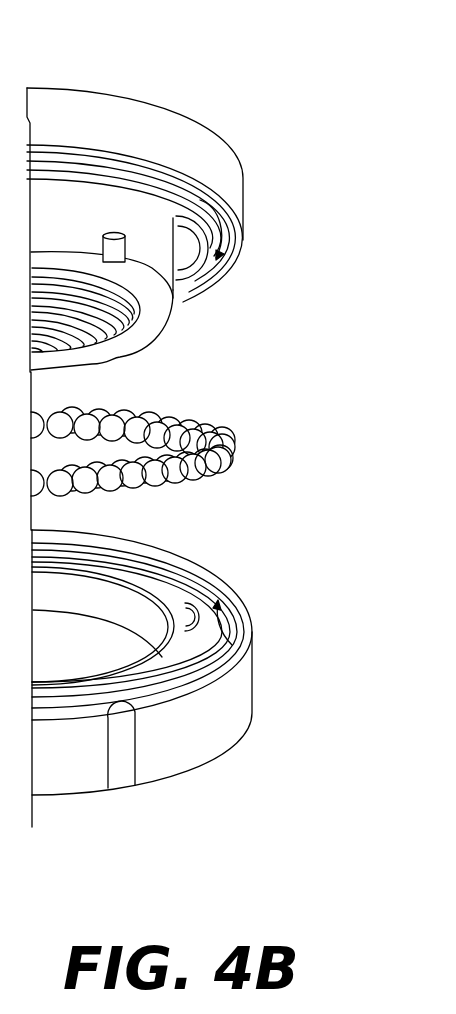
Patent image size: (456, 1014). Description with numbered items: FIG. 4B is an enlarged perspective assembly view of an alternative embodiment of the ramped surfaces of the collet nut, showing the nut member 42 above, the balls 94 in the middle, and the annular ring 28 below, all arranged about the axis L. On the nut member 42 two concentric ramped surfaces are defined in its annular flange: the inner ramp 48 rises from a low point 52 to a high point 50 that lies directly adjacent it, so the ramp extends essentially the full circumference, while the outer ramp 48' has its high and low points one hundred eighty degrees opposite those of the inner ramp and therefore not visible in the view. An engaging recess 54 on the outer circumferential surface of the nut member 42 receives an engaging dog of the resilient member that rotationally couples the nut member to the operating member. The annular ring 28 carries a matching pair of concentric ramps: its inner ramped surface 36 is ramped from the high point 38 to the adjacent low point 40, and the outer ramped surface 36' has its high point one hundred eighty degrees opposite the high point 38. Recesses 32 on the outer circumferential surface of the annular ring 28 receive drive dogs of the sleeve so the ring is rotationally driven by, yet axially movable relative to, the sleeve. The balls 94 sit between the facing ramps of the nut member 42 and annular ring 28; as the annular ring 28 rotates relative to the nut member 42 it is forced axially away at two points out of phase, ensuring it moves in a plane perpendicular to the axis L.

The nut member 42 is at (82, 113).
The inner ramped surface 48 is at (165, 214).
The outer ramped surface 48' is at (139, 170).
The high point 50 is at (180, 250).
The low point 52 is at (240, 242).
The engaging recess 54 is at (104, 255).
The axis L is at (32, 383).
The balls 94 is at (230, 447).
The annular ring 28 is at (83, 800).
The recess 32 is at (121, 550).
The inner ramped surface 36 is at (134, 597).
The outer ramped surface 36' is at (138, 596).
The high point 38 is at (215, 596).
The low point 40 is at (178, 644).